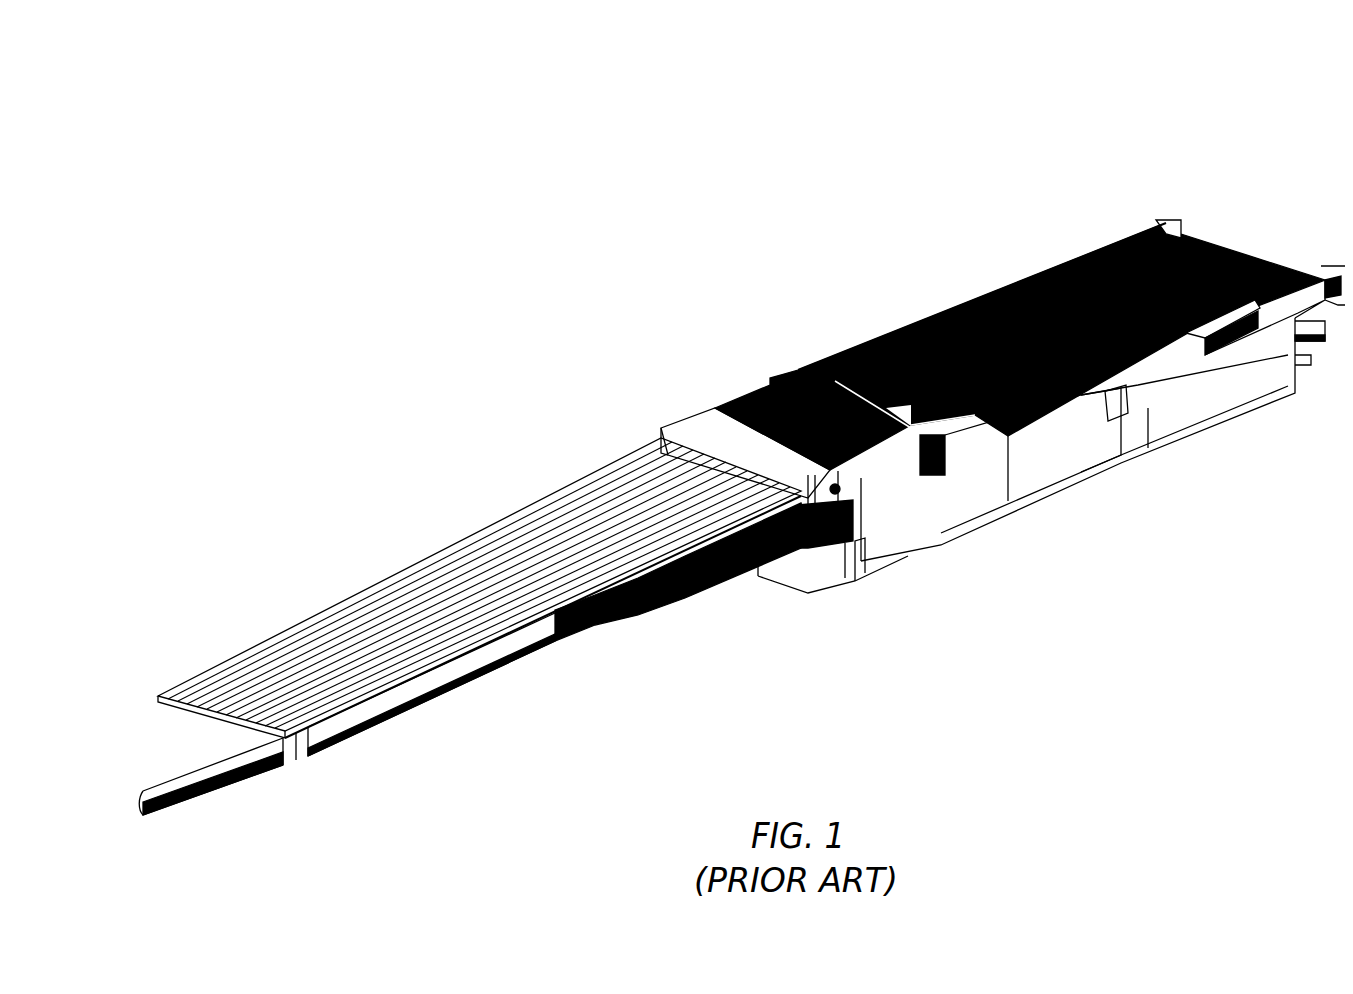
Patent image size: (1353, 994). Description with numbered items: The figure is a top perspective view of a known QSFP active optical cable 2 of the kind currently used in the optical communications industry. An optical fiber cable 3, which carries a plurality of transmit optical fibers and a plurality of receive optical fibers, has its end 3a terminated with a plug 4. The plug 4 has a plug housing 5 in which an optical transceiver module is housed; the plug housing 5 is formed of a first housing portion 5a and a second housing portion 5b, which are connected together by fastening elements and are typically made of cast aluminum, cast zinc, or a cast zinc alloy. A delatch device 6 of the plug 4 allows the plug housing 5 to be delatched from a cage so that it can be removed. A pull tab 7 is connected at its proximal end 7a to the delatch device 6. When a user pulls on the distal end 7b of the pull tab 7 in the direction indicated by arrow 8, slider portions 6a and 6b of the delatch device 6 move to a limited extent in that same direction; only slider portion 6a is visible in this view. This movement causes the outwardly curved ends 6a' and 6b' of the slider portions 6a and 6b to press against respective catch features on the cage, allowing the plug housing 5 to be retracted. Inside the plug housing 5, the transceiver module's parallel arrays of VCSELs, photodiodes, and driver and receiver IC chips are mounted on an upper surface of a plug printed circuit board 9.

The QSFP active optical cable 2 is at (391, 139).
The optical fiber cable 3 is at (276, 745).
The end of the cable 3a is at (708, 586).
The plug 4 is at (1226, 168).
The plug housing 5 is at (1226, 243).
The first housing portion 5a is at (1014, 298).
The second housing portion 5b is at (1136, 448).
The delatch device 6 is at (779, 404).
The slider portion 6a is at (1078, 440).
The outwardly curved end 6a' is at (1123, 445).
The slider portion 6b is at (982, 296).
The outwardly curved end 6b' is at (959, 319).
The pull tab 7 is at (473, 565).
The proximal end 7a is at (709, 438).
The distal end 7b is at (207, 690).
The arrow 8 is at (312, 566).
The plug printed circuit board 9 is at (1304, 336).